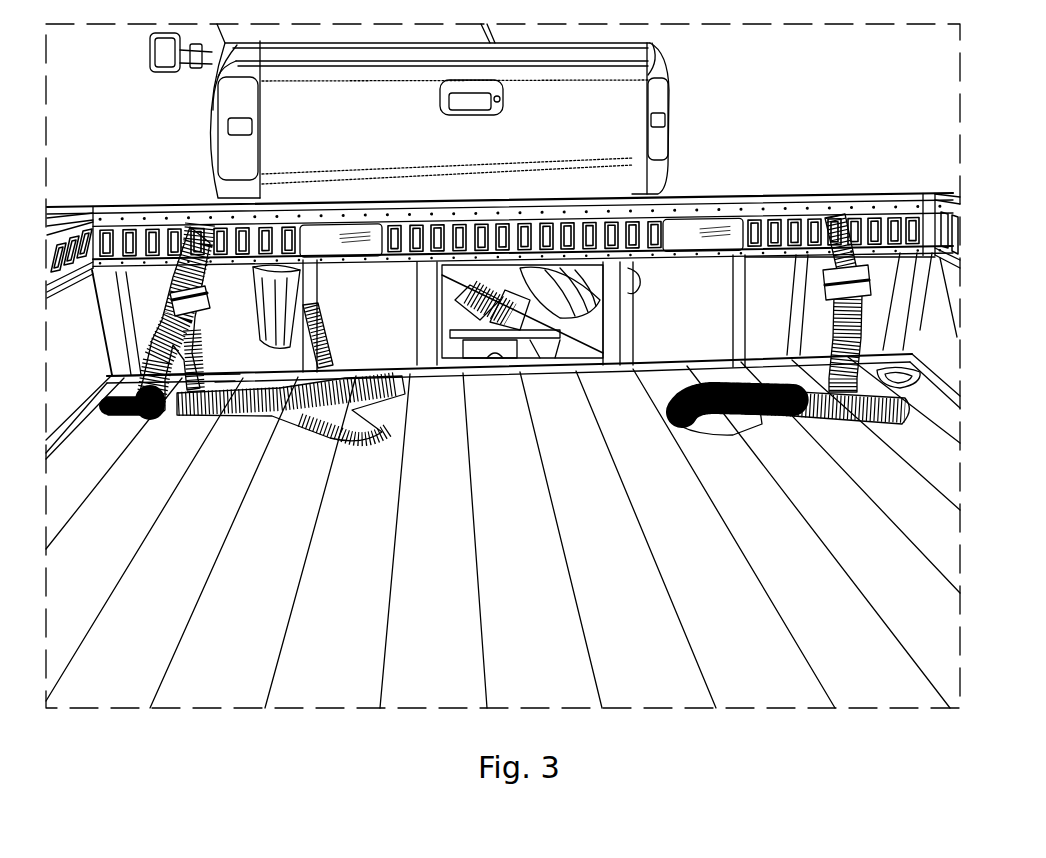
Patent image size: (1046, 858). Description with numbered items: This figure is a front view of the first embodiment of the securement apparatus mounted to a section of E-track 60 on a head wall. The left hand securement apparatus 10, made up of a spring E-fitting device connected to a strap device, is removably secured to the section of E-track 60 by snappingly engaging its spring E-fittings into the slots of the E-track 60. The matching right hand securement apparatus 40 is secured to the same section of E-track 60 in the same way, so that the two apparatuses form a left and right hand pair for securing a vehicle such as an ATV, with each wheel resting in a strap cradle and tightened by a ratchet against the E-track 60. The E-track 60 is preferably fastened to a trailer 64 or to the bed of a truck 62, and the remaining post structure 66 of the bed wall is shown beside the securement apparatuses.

The left hand securement apparatus 10 is at (370, 443).
The right hand securement apparatus 40 is at (722, 442).
The E-track 60 is at (764, 210).
The truck 62 is at (627, 118).
The trailer 64 is at (550, 594).
The bulkhead post 66 is at (630, 315).